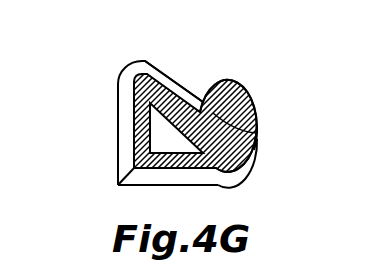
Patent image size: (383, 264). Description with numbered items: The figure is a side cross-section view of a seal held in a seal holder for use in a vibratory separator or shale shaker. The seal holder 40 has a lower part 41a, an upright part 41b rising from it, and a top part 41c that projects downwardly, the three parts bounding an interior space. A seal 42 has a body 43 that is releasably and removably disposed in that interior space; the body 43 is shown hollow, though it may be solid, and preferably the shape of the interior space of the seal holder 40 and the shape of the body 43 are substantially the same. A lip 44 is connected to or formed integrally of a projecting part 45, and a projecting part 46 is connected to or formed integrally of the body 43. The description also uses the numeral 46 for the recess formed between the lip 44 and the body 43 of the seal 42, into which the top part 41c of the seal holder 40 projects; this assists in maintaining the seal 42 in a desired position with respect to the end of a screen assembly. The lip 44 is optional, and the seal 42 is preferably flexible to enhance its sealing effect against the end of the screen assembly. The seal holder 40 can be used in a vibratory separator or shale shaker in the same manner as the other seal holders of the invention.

The seal holder 40 is at (110, 187).
The lower part 41a is at (172, 170).
The upright part 41b is at (118, 133).
The top part 41c is at (185, 86).
The seal 42 is at (243, 179).
The body 43 is at (134, 88).
The lip 44 is at (218, 81).
The projecting part 45 is at (254, 150).
The projecting part 46 is at (257, 133).